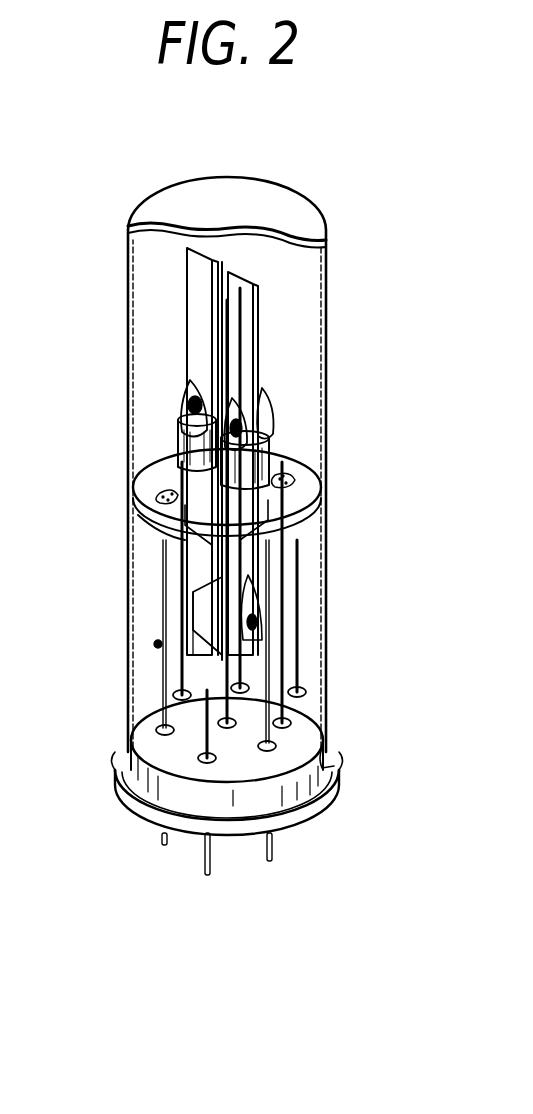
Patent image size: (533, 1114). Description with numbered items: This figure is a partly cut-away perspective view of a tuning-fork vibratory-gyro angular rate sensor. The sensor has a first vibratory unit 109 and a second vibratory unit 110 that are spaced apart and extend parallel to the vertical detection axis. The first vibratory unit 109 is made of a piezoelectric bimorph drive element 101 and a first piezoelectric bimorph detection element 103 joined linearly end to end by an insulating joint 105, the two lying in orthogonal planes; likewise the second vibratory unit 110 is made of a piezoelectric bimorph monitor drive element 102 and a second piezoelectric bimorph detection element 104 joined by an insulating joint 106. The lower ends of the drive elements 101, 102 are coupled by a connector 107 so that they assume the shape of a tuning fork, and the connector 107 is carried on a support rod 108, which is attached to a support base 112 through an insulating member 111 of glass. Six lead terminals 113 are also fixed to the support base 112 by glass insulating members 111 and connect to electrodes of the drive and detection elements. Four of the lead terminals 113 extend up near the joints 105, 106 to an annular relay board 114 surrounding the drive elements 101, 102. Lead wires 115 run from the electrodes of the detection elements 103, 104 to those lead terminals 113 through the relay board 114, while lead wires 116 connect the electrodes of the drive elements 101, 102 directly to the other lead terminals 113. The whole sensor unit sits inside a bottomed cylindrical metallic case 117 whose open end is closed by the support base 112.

The piezoelectric bimorph drive element 101 is at (185, 556).
The piezoelectric bimorph monitor drive element 102 is at (250, 557).
The first piezoelectric bimorph detection element 103 is at (190, 292).
The second piezoelectric bimorph detection element 104 is at (270, 282).
The insulating joint 105 is at (178, 433).
The insulating joint 106 is at (270, 445).
The connector 107 is at (205, 618).
The support rod 108 is at (130, 793).
The first vibratory unit 109 is at (178, 255).
The second vibratory unit 110 is at (255, 274).
The insulating member 111 is at (178, 690).
The support base 112 is at (172, 795).
The lead terminals 113 is at (155, 647).
The relay board 114 is at (148, 483).
The lead wires 115 is at (215, 378).
The lead wires 116 is at (168, 575).
The metallic case 117 is at (138, 527).